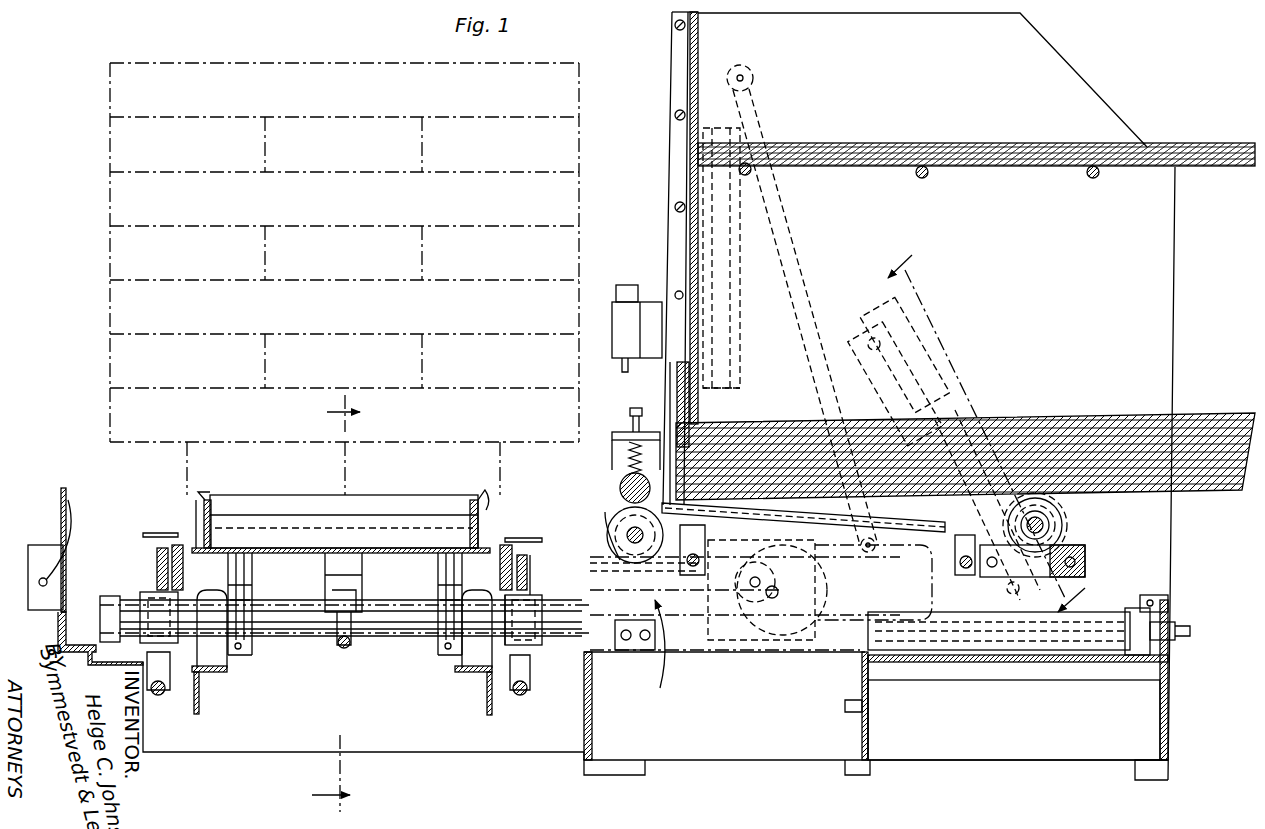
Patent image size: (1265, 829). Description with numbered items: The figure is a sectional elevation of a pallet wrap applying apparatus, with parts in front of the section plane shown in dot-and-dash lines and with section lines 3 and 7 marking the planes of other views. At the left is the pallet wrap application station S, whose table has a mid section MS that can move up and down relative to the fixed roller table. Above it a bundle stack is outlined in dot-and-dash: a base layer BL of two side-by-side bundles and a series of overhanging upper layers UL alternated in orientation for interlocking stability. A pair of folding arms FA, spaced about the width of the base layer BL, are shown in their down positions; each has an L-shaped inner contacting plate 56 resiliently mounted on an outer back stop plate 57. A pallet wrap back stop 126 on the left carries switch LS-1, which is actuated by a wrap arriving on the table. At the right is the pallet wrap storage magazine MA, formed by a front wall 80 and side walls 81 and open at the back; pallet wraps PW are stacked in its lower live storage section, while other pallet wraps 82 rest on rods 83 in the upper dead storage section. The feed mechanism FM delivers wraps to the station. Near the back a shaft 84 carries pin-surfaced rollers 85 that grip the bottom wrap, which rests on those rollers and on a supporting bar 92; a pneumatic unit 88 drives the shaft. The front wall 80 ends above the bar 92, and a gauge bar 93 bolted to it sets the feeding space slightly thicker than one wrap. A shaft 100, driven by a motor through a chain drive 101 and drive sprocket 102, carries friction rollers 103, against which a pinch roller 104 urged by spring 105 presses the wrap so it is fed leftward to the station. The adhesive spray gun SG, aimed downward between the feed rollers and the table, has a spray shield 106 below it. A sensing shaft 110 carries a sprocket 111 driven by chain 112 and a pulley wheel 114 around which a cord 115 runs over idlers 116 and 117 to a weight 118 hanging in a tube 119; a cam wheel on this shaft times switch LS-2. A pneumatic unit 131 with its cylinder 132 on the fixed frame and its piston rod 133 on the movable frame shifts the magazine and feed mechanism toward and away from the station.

The upper layers UL is at (110, 215).
The base layer BL is at (187, 458).
The section line 3 is at (326, 603).
The pallet wrap application station S is at (200, 520).
The inner contacting plate 56 is at (178, 545).
The outer back stop plate 57 is at (157, 565).
The folding arms FA is at (143, 535).
The mid section of the table MS is at (500, 545).
The pallet wrap back stop 126 is at (62, 490).
The switch LS-1 is at (28, 560).
The front wall 80 is at (672, 95).
The side walls 81 is at (976, 52).
The pallet wrap storage magazine MA is at (1180, 380).
The pallet wraps 82 is at (1170, 143).
The rods 83 is at (748, 175).
The idler 117 is at (748, 68).
The tube 119 is at (738, 288).
The weight 118 is at (738, 404).
The pneumatic unit 88 is at (940, 448).
The section line 7 is at (998, 429).
The pallet wraps PW is at (1118, 414).
The adhesive spray gun SG is at (614, 305).
The gauge bar 93 is at (677, 402).
The spray shield 106 is at (612, 470).
The spring 105 is at (625, 458).
The pinch roller 104 is at (620, 488).
The rollers 103 is at (607, 515).
The shaft 100 is at (627, 541).
The drive sprocket 102 is at (642, 575).
The chain drive 101 is at (650, 597).
The chain 112 is at (657, 635).
The idler 116 is at (870, 546).
The switch LS-2 is at (846, 538).
The shaft 110 is at (740, 648).
The pulley wheel 114 is at (765, 648).
The cord 115 is at (828, 580).
The sprocket 111 is at (873, 582).
The supporting bar 92 is at (950, 575).
The rollers 85 is at (1065, 512).
The shaft 84 is at (1050, 530).
The pneumatic unit 131 is at (1075, 612).
The cylinder 132 is at (1065, 655).
The piston rod 133 is at (898, 665).
The feed mechanism FM is at (876, 687).